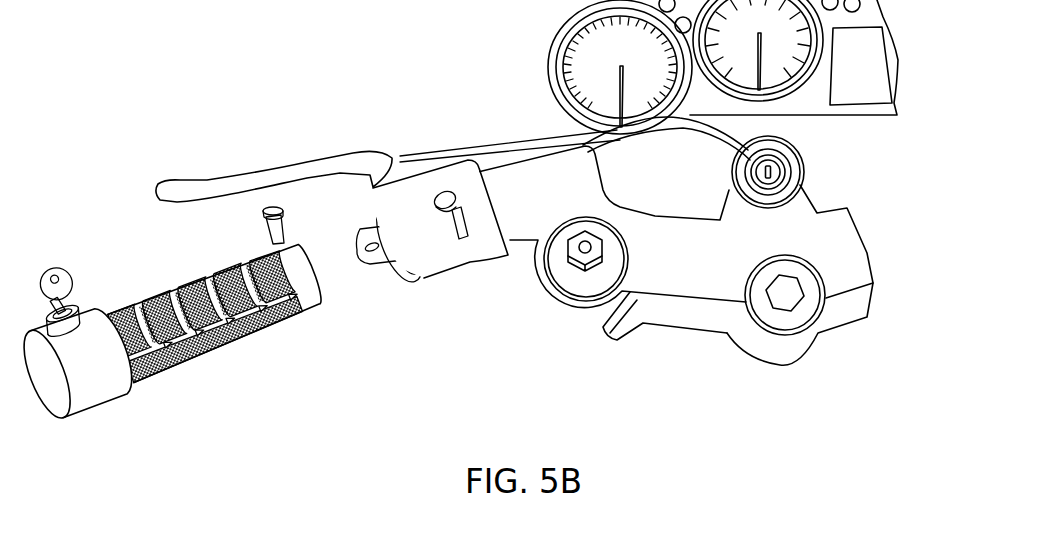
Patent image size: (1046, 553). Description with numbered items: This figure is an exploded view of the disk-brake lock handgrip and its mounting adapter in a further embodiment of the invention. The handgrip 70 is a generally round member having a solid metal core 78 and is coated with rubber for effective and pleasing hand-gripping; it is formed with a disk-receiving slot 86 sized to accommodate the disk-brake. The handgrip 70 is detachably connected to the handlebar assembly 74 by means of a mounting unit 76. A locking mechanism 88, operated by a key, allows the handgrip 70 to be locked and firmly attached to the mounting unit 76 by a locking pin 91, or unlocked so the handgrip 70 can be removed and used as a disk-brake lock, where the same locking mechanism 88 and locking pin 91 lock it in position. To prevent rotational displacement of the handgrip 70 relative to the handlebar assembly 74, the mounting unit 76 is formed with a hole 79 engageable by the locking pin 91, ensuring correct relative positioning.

The handgrip 70 is at (171, 348).
The handlebar assembly 74 is at (168, 114).
The mounting unit 76 is at (373, 258).
The solid metal core 78 is at (97, 387).
The hole 79 is at (360, 241).
The disk-receiving slot 86 is at (255, 330).
The locking mechanism 88 is at (68, 327).
The locking pin 91 is at (272, 243).